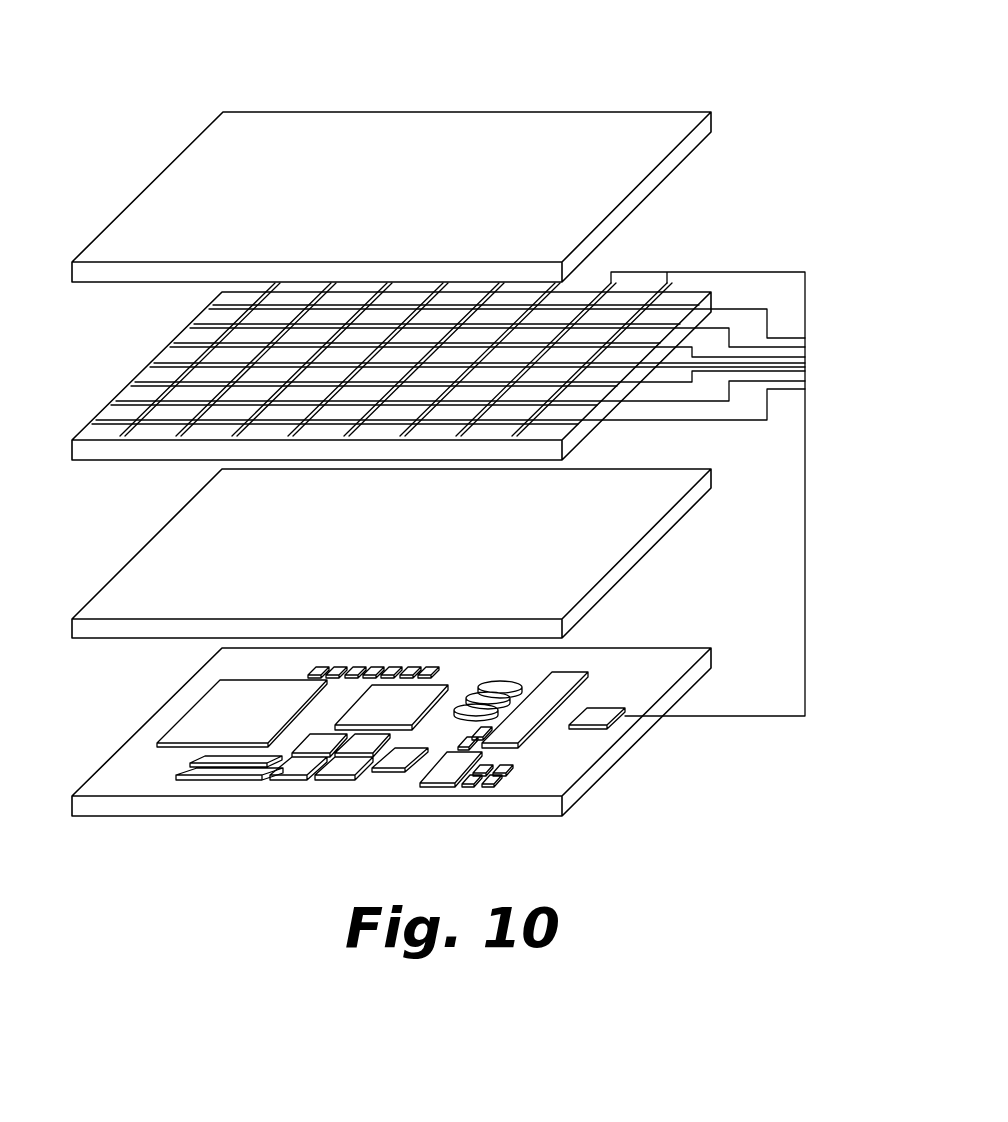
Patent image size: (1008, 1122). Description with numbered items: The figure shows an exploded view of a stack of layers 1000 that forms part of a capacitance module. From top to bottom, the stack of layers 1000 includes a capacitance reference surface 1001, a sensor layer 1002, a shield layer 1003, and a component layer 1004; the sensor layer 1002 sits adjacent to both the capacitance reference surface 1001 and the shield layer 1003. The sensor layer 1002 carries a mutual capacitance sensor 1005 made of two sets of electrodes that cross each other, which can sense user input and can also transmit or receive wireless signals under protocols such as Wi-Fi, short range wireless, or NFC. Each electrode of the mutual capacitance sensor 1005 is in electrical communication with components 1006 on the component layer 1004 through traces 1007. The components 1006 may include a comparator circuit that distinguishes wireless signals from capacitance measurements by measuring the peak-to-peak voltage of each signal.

The stack of layers 1000 is at (124, 76).
The capacitance reference surface 1001 is at (711, 112).
The sensor layer 1002 is at (711, 292).
The shield layer 1003 is at (711, 469).
The component layer 1004 is at (711, 648).
The mutual capacitance sensor 1005 is at (135, 367).
The components 1006 is at (270, 777).
The traces 1007 is at (805, 718).